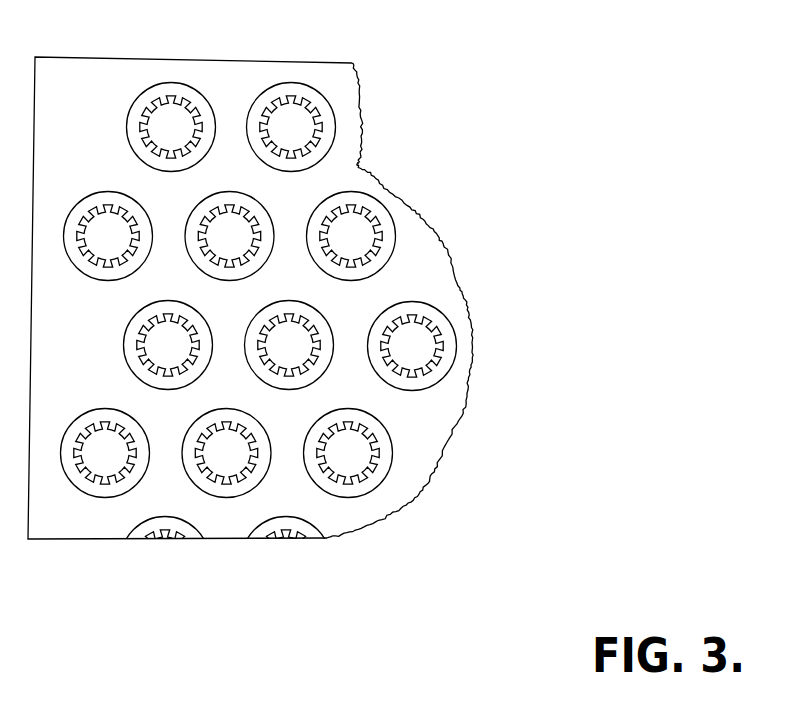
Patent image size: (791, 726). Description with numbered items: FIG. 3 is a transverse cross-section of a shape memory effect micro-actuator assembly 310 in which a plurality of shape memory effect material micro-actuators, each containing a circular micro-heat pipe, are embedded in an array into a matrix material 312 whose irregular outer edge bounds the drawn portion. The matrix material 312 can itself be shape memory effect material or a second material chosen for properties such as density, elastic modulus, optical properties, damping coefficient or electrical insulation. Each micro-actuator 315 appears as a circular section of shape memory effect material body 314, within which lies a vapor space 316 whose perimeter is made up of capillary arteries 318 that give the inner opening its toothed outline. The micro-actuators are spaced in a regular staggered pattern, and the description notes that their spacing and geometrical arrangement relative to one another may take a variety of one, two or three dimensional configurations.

The perforated plate / substrate 310 is at (366, 347).
The irregular edge of plate 312 is at (356, 166).
The circular land 314 is at (360, 502).
The annular ring / outer boundary of land 315 is at (452, 362).
The central aperture 316 is at (415, 355).
The toothed (gear-shaped) opening 318 is at (422, 315).